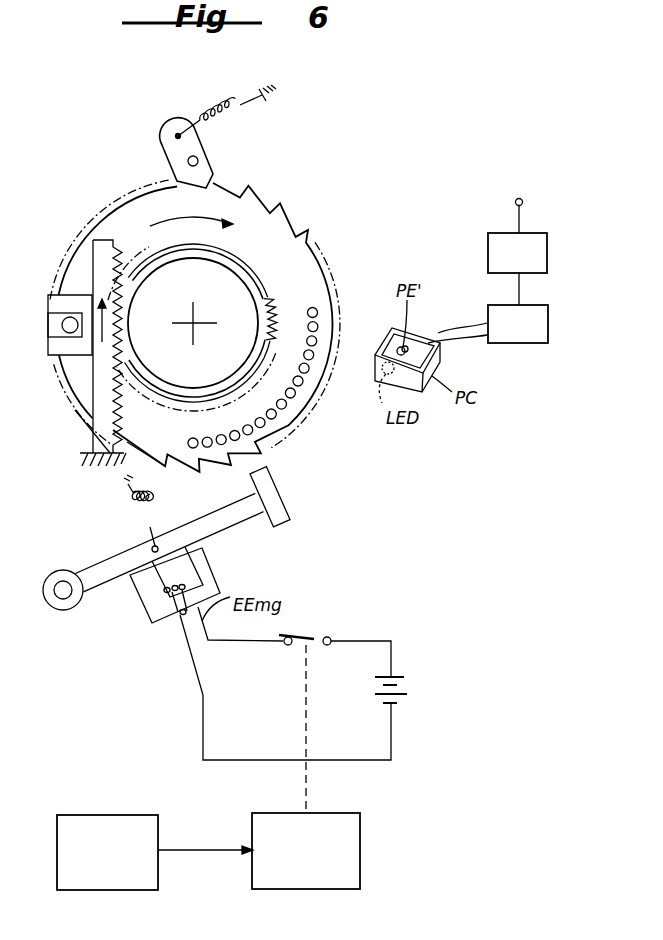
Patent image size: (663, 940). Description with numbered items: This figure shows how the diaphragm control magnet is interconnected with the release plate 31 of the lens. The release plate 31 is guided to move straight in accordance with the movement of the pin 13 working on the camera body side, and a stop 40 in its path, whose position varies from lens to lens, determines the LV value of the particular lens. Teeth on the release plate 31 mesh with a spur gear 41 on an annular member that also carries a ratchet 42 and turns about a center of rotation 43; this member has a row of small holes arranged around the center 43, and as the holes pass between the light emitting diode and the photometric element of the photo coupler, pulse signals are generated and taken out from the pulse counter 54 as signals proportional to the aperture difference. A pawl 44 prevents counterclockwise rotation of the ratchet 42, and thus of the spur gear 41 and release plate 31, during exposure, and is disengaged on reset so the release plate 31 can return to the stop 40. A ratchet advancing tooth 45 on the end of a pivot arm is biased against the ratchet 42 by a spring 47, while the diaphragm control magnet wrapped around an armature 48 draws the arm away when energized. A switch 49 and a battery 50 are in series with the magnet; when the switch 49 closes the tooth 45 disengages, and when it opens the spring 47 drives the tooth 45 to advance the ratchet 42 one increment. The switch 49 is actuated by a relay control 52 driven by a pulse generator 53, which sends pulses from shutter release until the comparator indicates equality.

The pin 13 is at (62, 323).
The release plate 31 is at (72, 298).
The stop 40 is at (84, 456).
The spur gear 41 is at (243, 260).
The ratchet 42 is at (308, 231).
The center of rotation 43 is at (193, 323).
The pawl 44 is at (212, 162).
The ratchet advancing tooth 45 is at (281, 498).
The spring 47 is at (140, 502).
The armature 48 is at (147, 593).
The switch 49 is at (318, 636).
The battery 50 is at (406, 683).
The relay control 52 is at (360, 846).
The pulse generator 53 is at (123, 885).
The pulse counter 54 is at (533, 333).